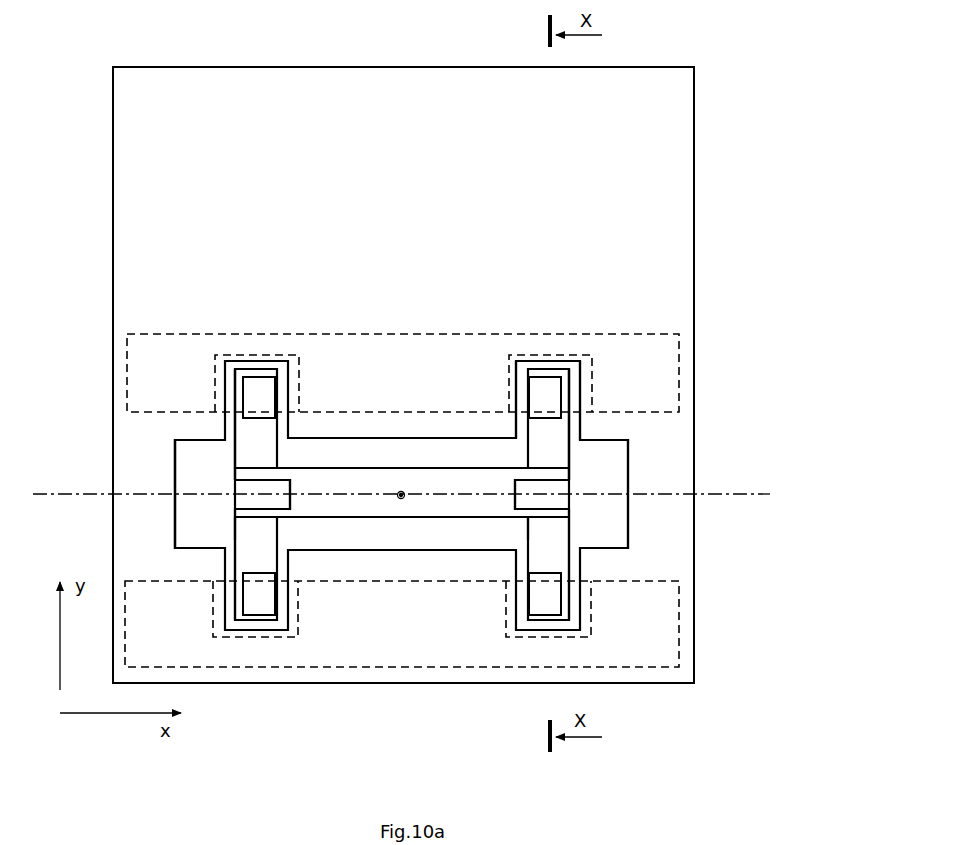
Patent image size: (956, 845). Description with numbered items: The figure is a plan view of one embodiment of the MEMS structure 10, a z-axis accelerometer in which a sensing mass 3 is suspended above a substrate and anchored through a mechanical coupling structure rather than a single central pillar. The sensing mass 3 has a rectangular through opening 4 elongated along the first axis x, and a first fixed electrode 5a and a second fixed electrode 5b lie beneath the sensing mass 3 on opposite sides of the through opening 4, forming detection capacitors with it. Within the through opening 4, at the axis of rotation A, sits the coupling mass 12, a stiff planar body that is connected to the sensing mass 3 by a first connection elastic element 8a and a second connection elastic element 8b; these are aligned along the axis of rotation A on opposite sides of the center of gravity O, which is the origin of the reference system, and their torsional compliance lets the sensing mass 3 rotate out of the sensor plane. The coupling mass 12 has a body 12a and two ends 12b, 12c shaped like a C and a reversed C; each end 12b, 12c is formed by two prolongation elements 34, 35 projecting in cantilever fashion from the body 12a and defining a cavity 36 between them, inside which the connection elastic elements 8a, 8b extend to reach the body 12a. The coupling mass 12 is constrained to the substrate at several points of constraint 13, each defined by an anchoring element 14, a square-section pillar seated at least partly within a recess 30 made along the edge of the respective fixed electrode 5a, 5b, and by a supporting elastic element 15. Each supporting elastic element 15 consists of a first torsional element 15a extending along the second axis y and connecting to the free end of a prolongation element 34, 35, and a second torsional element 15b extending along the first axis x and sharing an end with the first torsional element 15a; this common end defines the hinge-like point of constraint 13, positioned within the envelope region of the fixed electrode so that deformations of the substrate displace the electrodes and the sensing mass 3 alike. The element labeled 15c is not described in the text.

The sensing mass 3 is at (124, 120).
The through opening 4 is at (180, 459).
The first fixed electrode 5a is at (663, 358).
The second fixed electrode 5b is at (677, 612).
The first connection elastic element 8a is at (180, 496).
The second connection elastic element 8b is at (613, 495).
The MEMS structure 10 is at (719, 158).
The coupling mass 12 is at (395, 520).
The body 12a is at (367, 477).
The end 12b is at (574, 480).
The end 12c is at (232, 478).
The point of constraint 13 is at (231, 360).
The anchoring element 14 is at (265, 398).
The supporting elastic element 15 is at (242, 443).
The first torsional element 15a is at (572, 455).
The second torsional element 15b is at (550, 367).
The inner side wall 15c is at (527, 375).
The recess 30 is at (223, 391).
The prolongation element 34 is at (255, 475).
The prolongation element 35 is at (237, 517).
The cavity 36 is at (289, 482).
The center of gravity O is at (406, 493).
The axis of rotation A is at (735, 498).